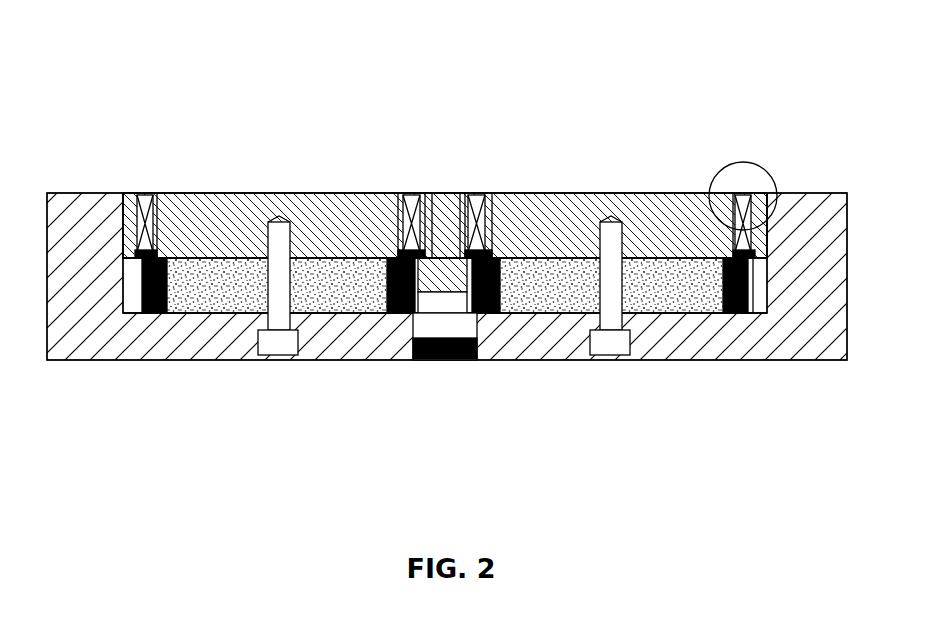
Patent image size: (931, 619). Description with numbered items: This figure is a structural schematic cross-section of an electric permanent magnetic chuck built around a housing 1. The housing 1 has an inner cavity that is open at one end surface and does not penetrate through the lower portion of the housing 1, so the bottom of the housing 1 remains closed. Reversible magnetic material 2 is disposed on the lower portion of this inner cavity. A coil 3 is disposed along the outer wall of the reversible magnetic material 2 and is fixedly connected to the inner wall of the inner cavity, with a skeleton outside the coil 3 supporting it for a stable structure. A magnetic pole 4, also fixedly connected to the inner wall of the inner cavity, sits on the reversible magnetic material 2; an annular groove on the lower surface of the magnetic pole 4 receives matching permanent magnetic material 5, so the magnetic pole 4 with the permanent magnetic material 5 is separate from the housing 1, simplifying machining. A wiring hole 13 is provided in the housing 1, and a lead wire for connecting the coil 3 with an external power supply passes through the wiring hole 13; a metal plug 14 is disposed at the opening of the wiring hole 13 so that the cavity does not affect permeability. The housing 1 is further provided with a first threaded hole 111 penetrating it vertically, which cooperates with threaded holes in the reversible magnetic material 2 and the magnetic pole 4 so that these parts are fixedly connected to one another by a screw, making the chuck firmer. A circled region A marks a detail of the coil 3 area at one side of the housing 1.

The housing 1 is at (86, 220).
The reversible magnetic material 2 is at (343, 262).
The coil 3 is at (203, 200).
The magnetic pole 4 is at (538, 218).
The permanent magnetic material 5 is at (472, 220).
The wiring hole 13 is at (457, 318).
The metal plug 14 is at (438, 358).
The first threaded hole 111 is at (282, 358).
The detail region A is at (743, 162).